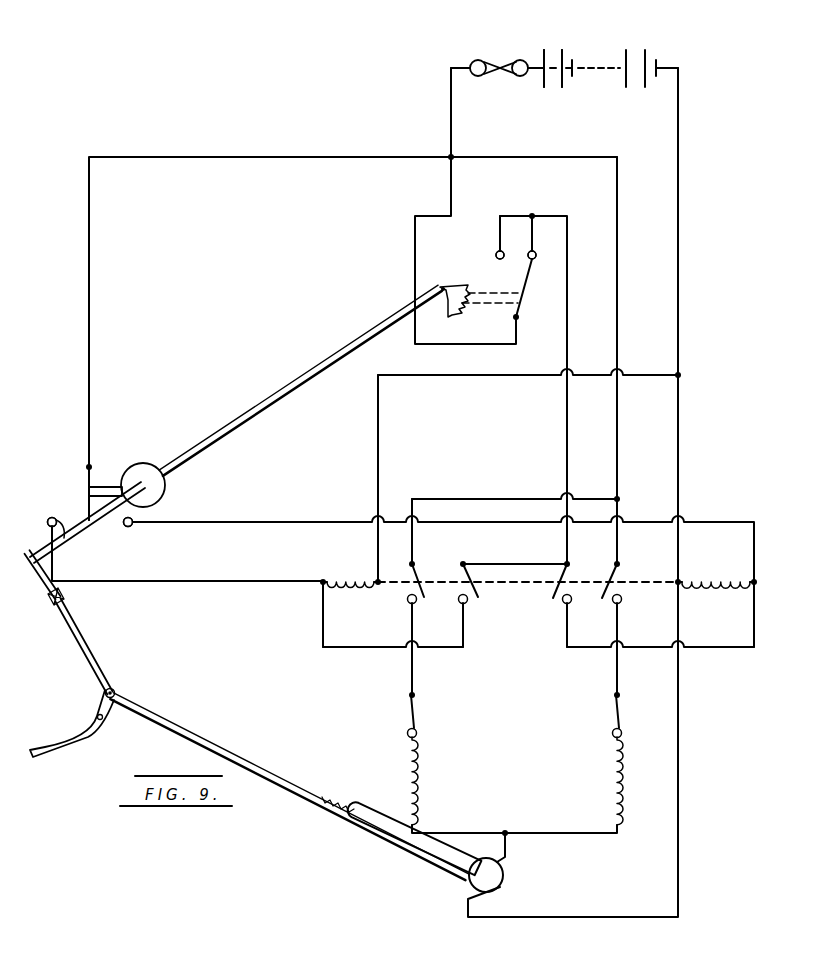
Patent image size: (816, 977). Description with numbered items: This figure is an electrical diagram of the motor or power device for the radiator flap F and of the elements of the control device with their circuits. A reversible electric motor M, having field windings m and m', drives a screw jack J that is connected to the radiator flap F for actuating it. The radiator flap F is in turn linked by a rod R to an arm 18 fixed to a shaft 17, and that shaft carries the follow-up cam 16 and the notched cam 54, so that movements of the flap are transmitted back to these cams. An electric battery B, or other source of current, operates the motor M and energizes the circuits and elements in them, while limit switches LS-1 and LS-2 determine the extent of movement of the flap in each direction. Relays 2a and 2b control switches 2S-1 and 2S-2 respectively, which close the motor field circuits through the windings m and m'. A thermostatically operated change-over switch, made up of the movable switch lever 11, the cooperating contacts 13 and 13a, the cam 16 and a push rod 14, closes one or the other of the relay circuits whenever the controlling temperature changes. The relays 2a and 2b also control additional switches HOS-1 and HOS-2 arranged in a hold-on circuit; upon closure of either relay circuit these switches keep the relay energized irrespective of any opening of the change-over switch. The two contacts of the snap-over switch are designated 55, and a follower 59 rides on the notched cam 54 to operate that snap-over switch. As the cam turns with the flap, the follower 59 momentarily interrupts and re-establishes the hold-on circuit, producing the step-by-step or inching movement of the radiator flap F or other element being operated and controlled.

The electric battery B is at (637, 50).
The notched cam 54 is at (452, 287).
The snap-over switch contacts 55 is at (498, 252).
The follower 59 is at (478, 306).
The shaft 17 is at (283, 393).
The follow-up cam 16 is at (147, 466).
The push rod 14 is at (104, 486).
The movable switch lever 11 is at (89, 494).
The contact 13 is at (62, 545).
The contact 13a is at (130, 526).
The arm 18 is at (41, 580).
The rod R is at (80, 648).
The radiator flap F is at (72, 738).
The screw jack J is at (410, 848).
The reversible electric motor M is at (486, 875).
The relay 2a is at (330, 578).
The relay 2b is at (724, 578).
The switch 2S-1 is at (425, 586).
The switch 2S-2 is at (606, 586).
The hold-on switch HOS-1 is at (480, 594).
The hold-on switch HOS-2 is at (562, 592).
The limit switch LS-1 is at (408, 712).
The limit switch LS-2 is at (612, 712).
The field winding m is at (433, 781).
The field winding m' is at (597, 781).